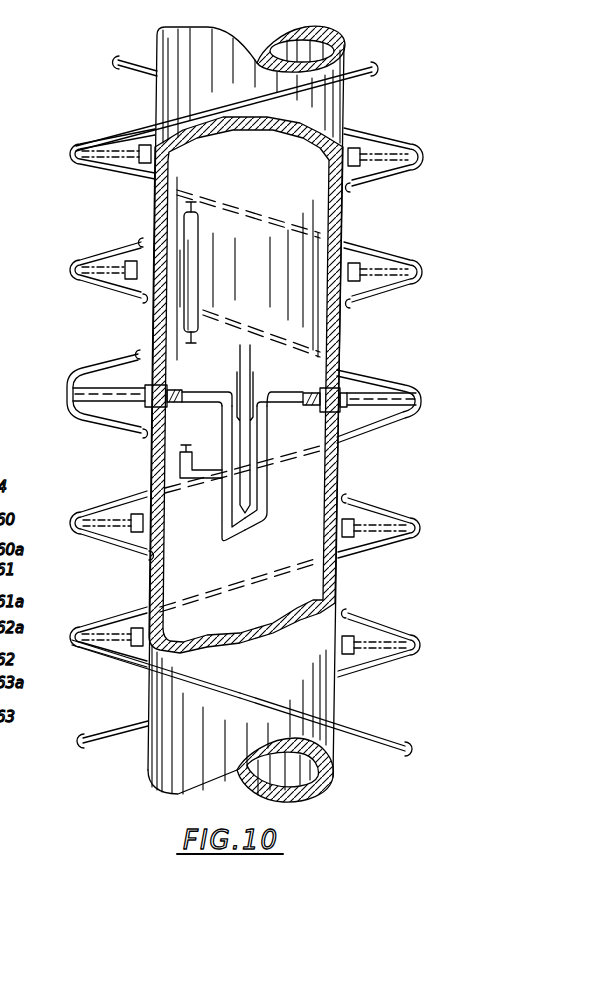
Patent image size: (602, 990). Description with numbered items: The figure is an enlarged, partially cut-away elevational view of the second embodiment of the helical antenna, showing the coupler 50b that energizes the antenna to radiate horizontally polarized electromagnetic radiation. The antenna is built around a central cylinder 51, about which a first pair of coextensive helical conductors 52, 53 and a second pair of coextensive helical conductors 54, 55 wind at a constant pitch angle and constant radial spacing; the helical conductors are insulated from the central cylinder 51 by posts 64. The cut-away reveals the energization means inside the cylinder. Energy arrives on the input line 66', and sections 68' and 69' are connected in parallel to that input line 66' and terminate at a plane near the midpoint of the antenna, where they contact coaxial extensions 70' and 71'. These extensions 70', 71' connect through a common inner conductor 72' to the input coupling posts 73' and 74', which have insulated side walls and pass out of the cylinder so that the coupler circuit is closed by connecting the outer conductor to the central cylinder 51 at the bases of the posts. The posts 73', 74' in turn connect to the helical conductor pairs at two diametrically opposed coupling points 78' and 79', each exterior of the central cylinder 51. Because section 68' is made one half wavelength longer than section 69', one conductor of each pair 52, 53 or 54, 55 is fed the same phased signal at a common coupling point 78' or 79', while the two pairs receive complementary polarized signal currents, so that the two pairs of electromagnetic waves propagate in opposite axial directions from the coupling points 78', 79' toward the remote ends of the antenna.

The coupler 50b is at (435, 435).
The central cylinder 51 is at (145, 768).
The helical conductor 52 is at (113, 130).
The helical conductor 53 is at (388, 137).
The helical conductor 54 is at (97, 421).
The helical conductor 55 is at (377, 434).
The posts 64 is at (377, 267).
The input line 66' is at (196, 324).
The section 68' is at (206, 473).
The section 69' is at (275, 468).
The coaxial extension 70' is at (207, 379).
The coaxial extension 71' is at (280, 379).
The common inner conductor 72' is at (240, 429).
The input coupling post 73' is at (351, 369).
The input coupling post 74' is at (127, 360).
The coupling point 78' is at (413, 374).
The coupling point 79' is at (74, 373).